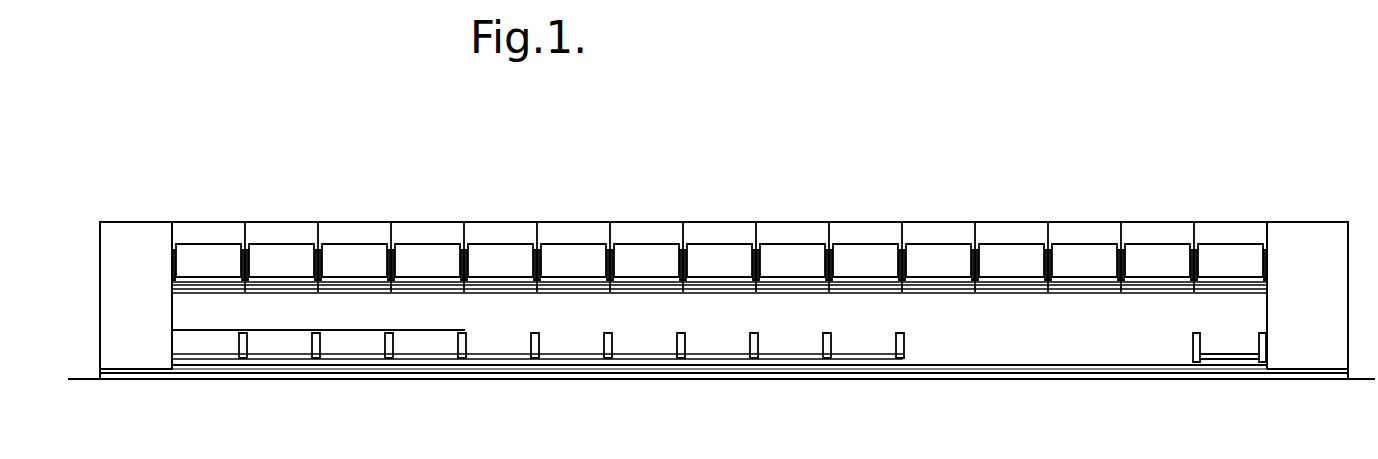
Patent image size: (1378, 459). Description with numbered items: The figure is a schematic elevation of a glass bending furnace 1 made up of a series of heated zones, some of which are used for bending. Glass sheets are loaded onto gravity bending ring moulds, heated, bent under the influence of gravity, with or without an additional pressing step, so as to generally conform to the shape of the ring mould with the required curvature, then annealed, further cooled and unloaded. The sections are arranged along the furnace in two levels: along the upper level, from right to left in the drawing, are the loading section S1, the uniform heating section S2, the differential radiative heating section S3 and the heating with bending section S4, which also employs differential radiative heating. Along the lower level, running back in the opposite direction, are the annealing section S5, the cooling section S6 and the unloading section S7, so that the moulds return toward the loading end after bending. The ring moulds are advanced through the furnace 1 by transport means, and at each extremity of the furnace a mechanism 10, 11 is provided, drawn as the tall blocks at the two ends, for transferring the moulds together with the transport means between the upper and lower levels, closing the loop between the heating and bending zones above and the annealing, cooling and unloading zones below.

The glass bending furnace 1 is at (711, 131).
The transfer mechanism 10 is at (1312, 232).
The transfer mechanism 11 is at (137, 230).
The loading section S1 is at (1267, 396).
The uniform heating section S2 is at (1268, 205).
The differential radiative heating section S3 is at (903, 205).
The heating with bending section S4 is at (533, 205).
The annealing section S5 is at (174, 398).
The cooling section S6 is at (825, 398).
The unloading section S7 is at (903, 398).